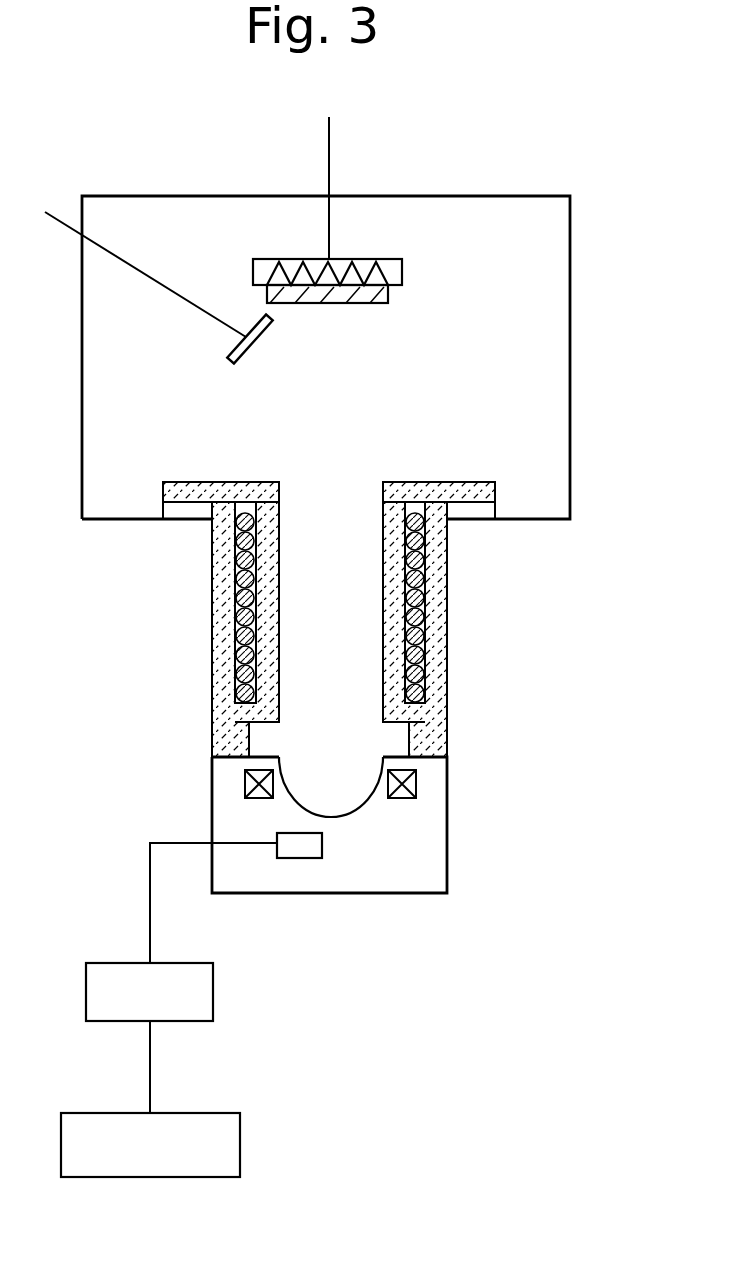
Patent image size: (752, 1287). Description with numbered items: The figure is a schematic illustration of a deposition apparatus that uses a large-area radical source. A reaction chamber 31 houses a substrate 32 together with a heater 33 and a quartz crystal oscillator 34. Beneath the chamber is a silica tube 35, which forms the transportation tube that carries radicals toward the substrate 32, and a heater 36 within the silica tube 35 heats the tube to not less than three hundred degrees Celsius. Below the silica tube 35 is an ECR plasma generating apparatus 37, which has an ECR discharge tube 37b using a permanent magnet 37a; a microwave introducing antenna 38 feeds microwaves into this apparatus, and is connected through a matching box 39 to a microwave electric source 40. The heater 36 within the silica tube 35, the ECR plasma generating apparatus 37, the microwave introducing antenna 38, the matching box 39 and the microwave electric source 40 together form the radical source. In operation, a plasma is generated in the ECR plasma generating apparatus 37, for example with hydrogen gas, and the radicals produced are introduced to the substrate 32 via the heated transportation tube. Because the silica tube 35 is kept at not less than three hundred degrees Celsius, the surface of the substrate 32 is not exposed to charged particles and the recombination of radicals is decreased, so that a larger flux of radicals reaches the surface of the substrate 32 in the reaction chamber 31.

The reaction chamber 31 is at (570, 408).
The substrate 32 is at (388, 300).
The heater 33 is at (387, 258).
The quartz crystal oscillator 34 is at (231, 350).
The silica tube 35 is at (497, 502).
The heater within the silica tube 36 is at (416, 642).
The ECR plasma generating apparatus 37 is at (447, 818).
The permanent magnet 37a is at (418, 783).
The ECR discharge tube 37b is at (353, 812).
The microwave introducing antenna 38 is at (312, 858).
The matching box 39 is at (213, 995).
The microwave electric source 40 is at (232, 1154).